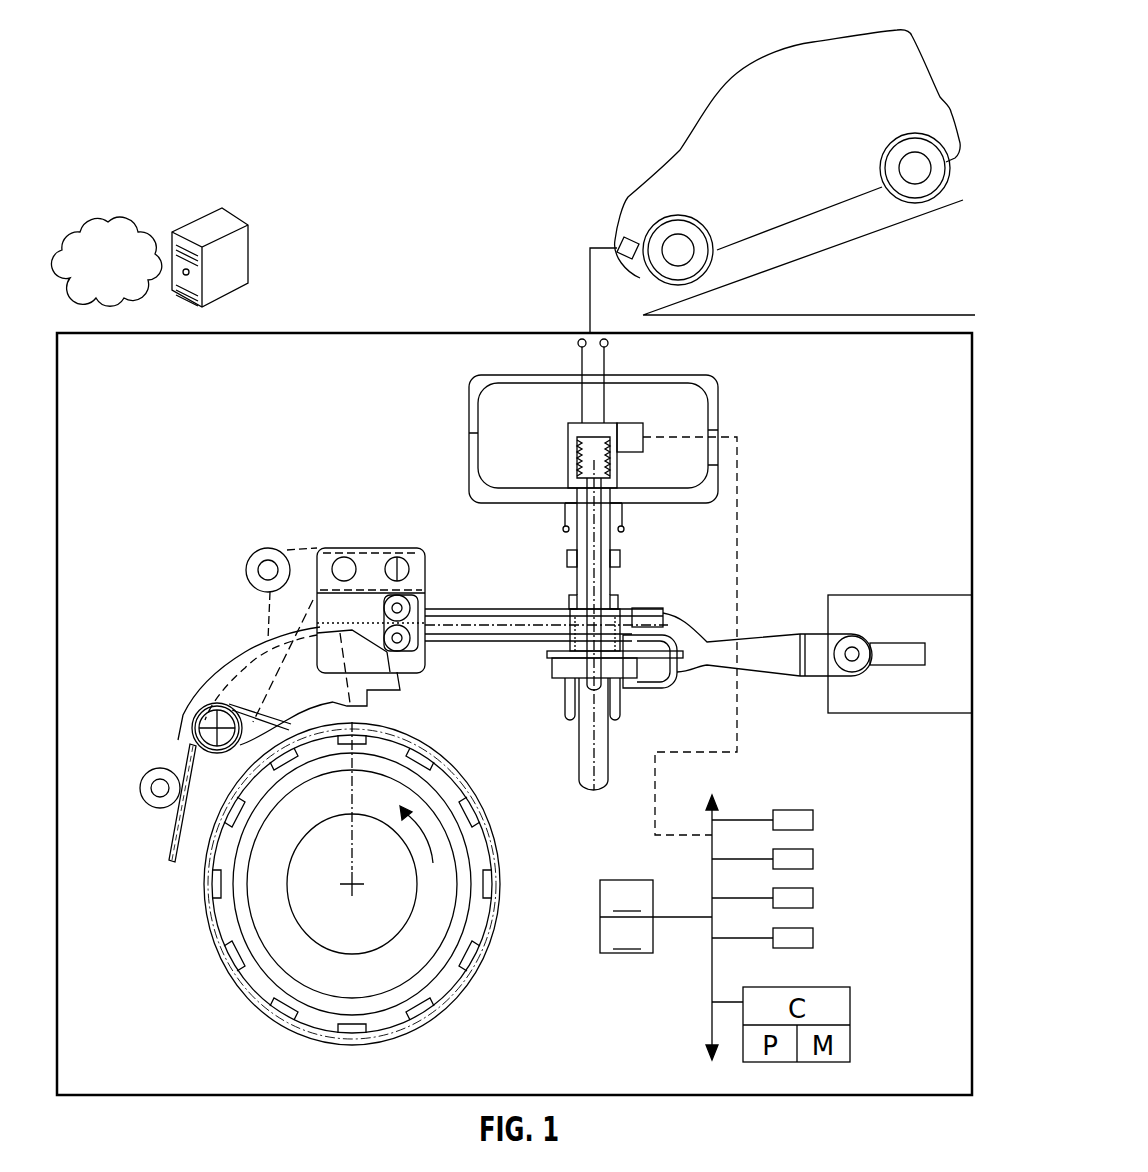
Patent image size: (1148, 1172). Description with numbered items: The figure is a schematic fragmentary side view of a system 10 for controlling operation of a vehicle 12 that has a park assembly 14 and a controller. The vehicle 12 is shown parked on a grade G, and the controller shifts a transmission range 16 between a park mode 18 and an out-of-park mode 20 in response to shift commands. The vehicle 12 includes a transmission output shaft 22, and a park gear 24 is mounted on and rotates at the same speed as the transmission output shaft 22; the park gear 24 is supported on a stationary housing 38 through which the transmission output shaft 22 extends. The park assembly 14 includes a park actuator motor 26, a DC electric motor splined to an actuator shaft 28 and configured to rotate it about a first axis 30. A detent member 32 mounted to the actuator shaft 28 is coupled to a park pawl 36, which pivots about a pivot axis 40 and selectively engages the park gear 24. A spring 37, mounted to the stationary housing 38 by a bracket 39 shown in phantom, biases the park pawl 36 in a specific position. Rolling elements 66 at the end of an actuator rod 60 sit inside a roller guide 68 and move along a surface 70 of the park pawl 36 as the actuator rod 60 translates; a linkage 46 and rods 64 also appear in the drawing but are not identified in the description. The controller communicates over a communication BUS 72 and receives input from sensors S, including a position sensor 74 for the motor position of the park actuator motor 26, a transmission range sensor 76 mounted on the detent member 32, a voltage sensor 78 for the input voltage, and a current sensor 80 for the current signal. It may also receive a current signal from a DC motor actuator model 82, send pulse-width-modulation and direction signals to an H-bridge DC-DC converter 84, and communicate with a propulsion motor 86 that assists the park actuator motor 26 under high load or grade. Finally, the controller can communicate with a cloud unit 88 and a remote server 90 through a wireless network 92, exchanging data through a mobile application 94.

The system 10 is at (447, 333).
The vehicle 12 is at (580, 218).
The park assembly 14 is at (341, 883).
The transmission range 16 is at (653, 951).
The park mode 18 is at (627, 899).
The out-of-park mode 20 is at (627, 953).
The transmission output shaft 22 is at (300, 928).
The park gear 24 is at (207, 920).
The park actuator motor 26 is at (568, 455).
The actuator shaft 28 is at (612, 580).
The first axis 30 is at (587, 585).
The detent member 32 is at (660, 678).
The park pawl 36 is at (238, 658).
The spring 37 is at (170, 835).
The stationary housing 38 is at (718, 466).
The bracket 39 is at (287, 548).
The pivot axis 40 is at (195, 722).
The actuator arm 46 is at (682, 628).
The actuator rod 60 is at (482, 609).
The push rods 64 is at (470, 609).
The rolling elements 66 is at (412, 652).
The roller guide 68 is at (372, 548).
The surface 70 is at (390, 676).
The communication BUS 72 is at (712, 878).
The position sensor 74 is at (643, 430).
The transmission range sensor 76 is at (556, 680).
The voltage sensor 78 is at (579, 338).
The current sensor 80 is at (605, 338).
The DC motor actuator model 82 is at (813, 938).
The H-bridge DC-DC converter 84 is at (813, 898).
The propulsion motor 86 is at (813, 859).
The cloud unit 88 is at (108, 215).
The remote server 90 is at (222, 208).
The wireless network 92 is at (275, 292).
The mobile application 94 is at (813, 820).
The sensors S is at (640, 413).
The grade G is at (733, 285).